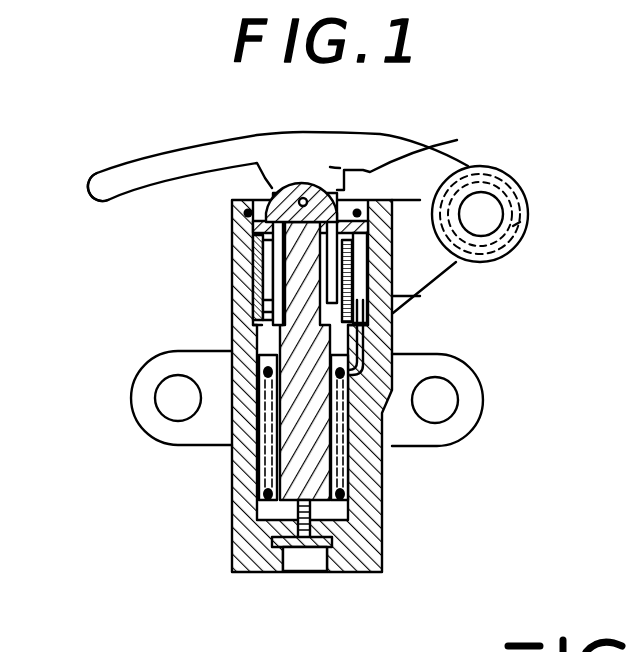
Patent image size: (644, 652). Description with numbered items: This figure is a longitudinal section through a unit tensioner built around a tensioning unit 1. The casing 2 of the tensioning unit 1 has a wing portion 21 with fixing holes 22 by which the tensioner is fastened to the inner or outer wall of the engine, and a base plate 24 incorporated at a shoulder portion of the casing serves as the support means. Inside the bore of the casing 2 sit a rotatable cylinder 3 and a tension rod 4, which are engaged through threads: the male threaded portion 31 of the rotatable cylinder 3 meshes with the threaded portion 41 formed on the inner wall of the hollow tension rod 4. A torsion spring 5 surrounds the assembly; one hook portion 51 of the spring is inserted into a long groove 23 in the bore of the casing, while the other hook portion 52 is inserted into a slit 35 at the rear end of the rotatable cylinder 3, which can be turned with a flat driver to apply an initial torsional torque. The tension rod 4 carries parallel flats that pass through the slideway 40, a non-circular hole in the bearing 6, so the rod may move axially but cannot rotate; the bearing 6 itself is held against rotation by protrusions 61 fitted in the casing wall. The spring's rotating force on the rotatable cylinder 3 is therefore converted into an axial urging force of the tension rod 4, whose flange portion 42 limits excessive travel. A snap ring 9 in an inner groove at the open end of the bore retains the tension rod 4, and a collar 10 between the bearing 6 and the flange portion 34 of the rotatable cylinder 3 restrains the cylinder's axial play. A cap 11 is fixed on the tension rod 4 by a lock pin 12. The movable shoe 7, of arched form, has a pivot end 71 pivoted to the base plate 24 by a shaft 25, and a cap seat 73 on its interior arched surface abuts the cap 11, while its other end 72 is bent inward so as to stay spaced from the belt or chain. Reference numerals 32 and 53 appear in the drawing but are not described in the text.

The tensioning unit 1 is at (366, 575).
The casing 2 is at (242, 474).
The rotatable cylinder 3 is at (290, 440).
The tension rod 4 is at (253, 280).
The torsion spring 5 is at (343, 500).
The bearing 6 is at (392, 234).
The movable shoe 7 is at (182, 152).
The snap ring 9 is at (280, 197).
The collar 10 is at (258, 262).
The cap 11 is at (318, 162).
The lock pin 12 is at (330, 167).
The wing portion 21 is at (145, 372).
The fixing holes 22 is at (165, 403).
The long groove 23 is at (420, 296).
The base plate 24 is at (474, 271).
The shaft 25 is at (492, 208).
The male threaded portion 31 is at (250, 234).
The O-ring seal 32 is at (266, 504).
The flange portion 34 is at (250, 334).
The slit 35 is at (330, 549).
The slideway 40 is at (430, 152).
The threaded portion 41 is at (255, 302).
The flange portion 42 is at (255, 320).
The hook portion 51 is at (393, 331).
The hook portion 52 is at (284, 540).
The channel 53 is at (340, 468).
The protrusions 61 is at (353, 244).
The pivot end 71 is at (513, 226).
The other end 72 is at (95, 182).
The cap seat 73 is at (285, 160).